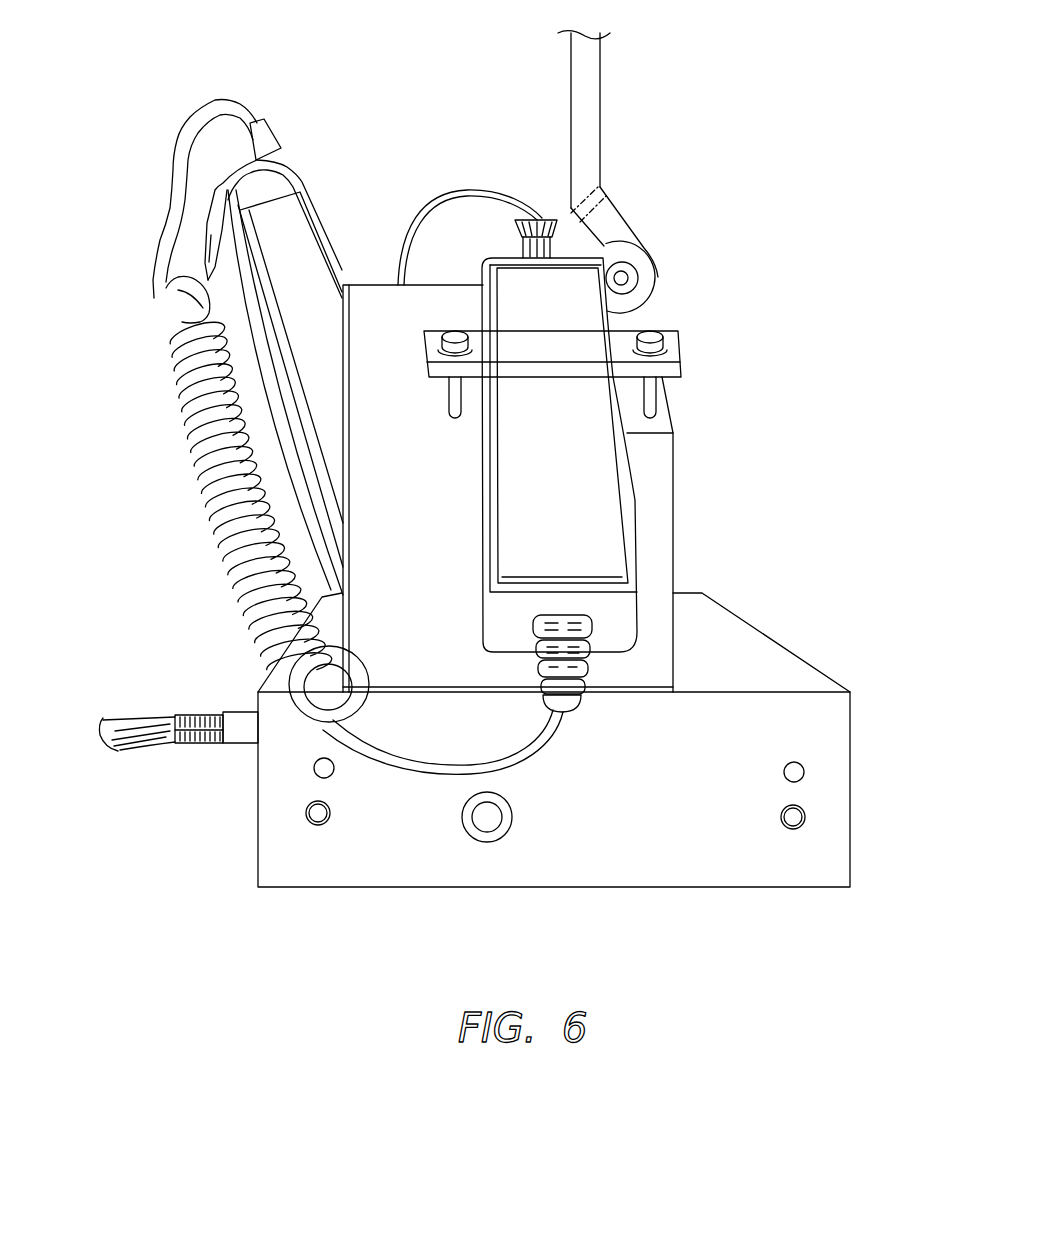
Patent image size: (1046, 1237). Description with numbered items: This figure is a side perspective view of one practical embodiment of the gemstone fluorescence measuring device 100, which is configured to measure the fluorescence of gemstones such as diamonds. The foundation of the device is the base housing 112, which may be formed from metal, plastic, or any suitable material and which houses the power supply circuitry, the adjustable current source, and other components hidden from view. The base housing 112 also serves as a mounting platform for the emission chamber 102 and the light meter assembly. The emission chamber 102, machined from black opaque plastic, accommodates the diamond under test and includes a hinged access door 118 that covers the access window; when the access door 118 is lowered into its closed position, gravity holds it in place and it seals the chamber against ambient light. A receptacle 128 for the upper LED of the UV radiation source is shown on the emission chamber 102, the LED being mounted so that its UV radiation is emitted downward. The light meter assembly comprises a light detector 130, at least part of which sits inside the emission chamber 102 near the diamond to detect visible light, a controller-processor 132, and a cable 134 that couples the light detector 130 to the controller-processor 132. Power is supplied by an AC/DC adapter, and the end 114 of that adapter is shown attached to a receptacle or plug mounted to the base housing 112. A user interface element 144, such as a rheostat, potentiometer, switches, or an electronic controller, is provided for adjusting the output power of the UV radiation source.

The fluorescence measuring device 100 is at (768, 364).
The emission chamber 102 is at (676, 487).
The base housing 112 is at (788, 648).
The end of the AC/DC adapter 114 is at (242, 747).
The hinged access door 118 is at (600, 125).
The receptacle 128 is at (546, 218).
The light detector 130 is at (582, 487).
The controller-processor 132 is at (322, 188).
The cable 134 is at (255, 620).
The user interface element 144 is at (475, 836).